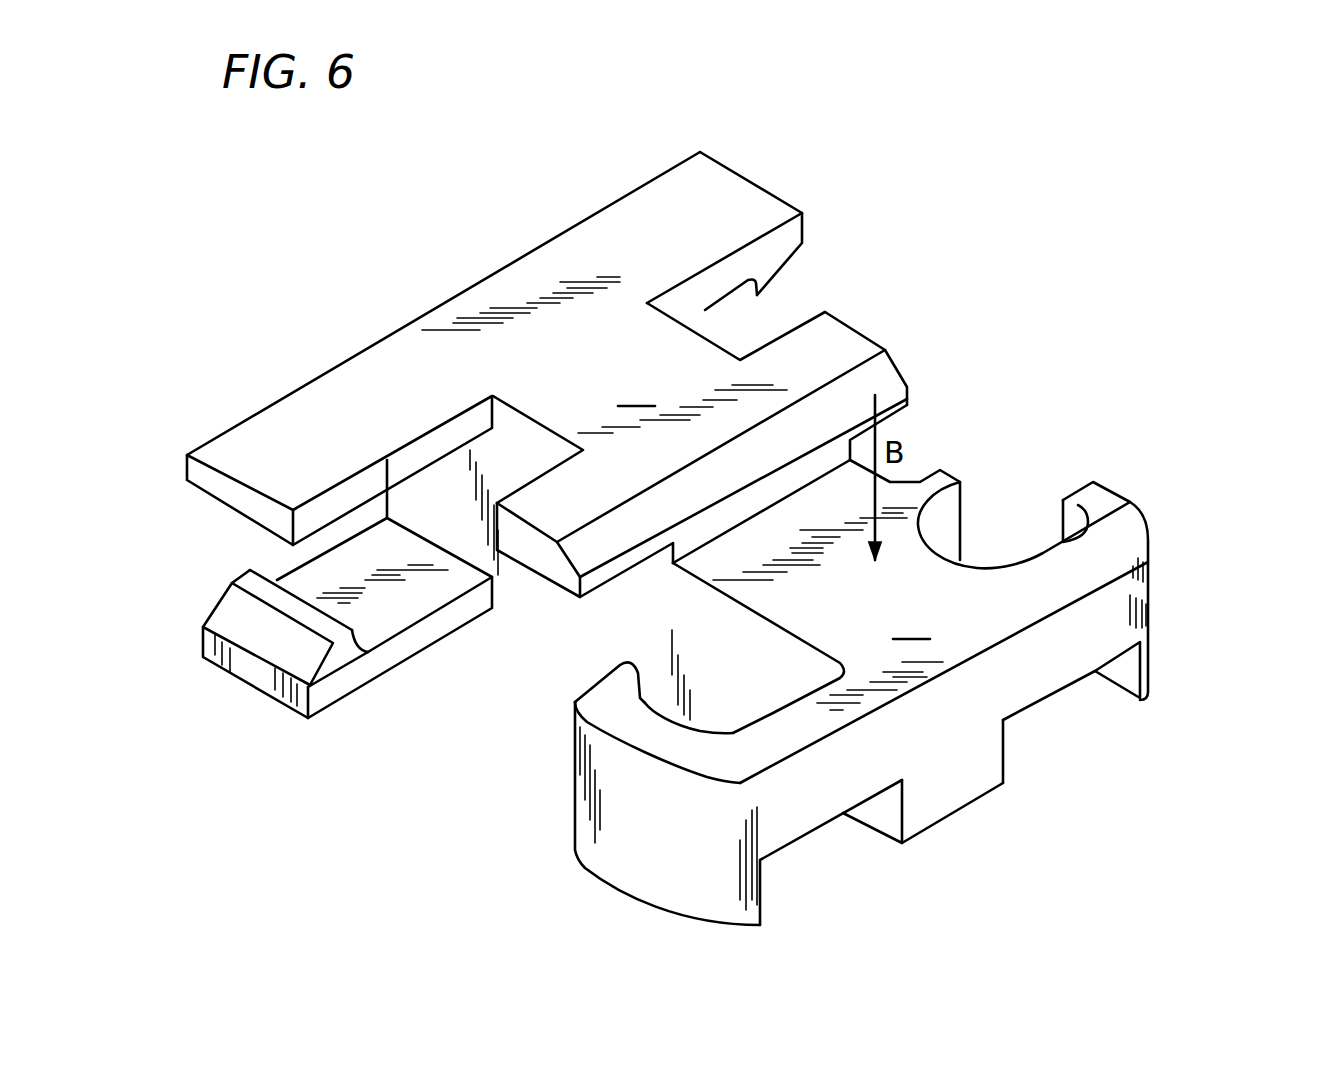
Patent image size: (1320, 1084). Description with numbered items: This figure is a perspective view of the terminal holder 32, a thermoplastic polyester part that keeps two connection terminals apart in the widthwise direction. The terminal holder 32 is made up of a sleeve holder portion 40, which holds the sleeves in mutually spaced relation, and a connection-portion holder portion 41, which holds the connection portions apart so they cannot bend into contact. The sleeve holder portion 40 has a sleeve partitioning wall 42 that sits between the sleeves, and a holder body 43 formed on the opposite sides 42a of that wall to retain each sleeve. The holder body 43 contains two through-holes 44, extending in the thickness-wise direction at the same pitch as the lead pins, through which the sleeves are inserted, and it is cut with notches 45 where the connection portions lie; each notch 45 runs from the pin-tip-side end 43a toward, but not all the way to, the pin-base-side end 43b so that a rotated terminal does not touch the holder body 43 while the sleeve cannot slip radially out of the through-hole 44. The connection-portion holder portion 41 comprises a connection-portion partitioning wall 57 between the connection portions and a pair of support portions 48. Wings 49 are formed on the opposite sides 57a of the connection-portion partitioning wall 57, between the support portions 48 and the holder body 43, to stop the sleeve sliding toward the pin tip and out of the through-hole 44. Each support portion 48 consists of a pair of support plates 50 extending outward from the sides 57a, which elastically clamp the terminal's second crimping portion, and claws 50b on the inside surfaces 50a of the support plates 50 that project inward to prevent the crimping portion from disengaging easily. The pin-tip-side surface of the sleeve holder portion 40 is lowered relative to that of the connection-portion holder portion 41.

The terminal holder 32 is at (988, 315).
The sleeve holder portion 40 is at (1020, 680).
The connection-portion holder portion 41 is at (563, 268).
The sleeve partitioning wall 42 is at (950, 730).
The opposite sides of the sleeve partitioning wall 42a is at (1010, 748).
The holder body 43 is at (1113, 518).
The pin-tip-side end of the holder body 43a is at (1150, 555).
The pin-base-side end of the holder body 43b is at (1152, 670).
The through-hole 44 is at (733, 733).
The notch 45 is at (1072, 485).
The support portion 48 is at (700, 205).
The wing 49 is at (837, 343).
The support plate 50 is at (745, 210).
The inside surface of the support plate 50a is at (427, 494).
The claw 50b is at (778, 256).
The connection-portion partitioning wall 57 is at (590, 358).
The opposite sides of the connection-portion partitioning wall 57a is at (712, 337).